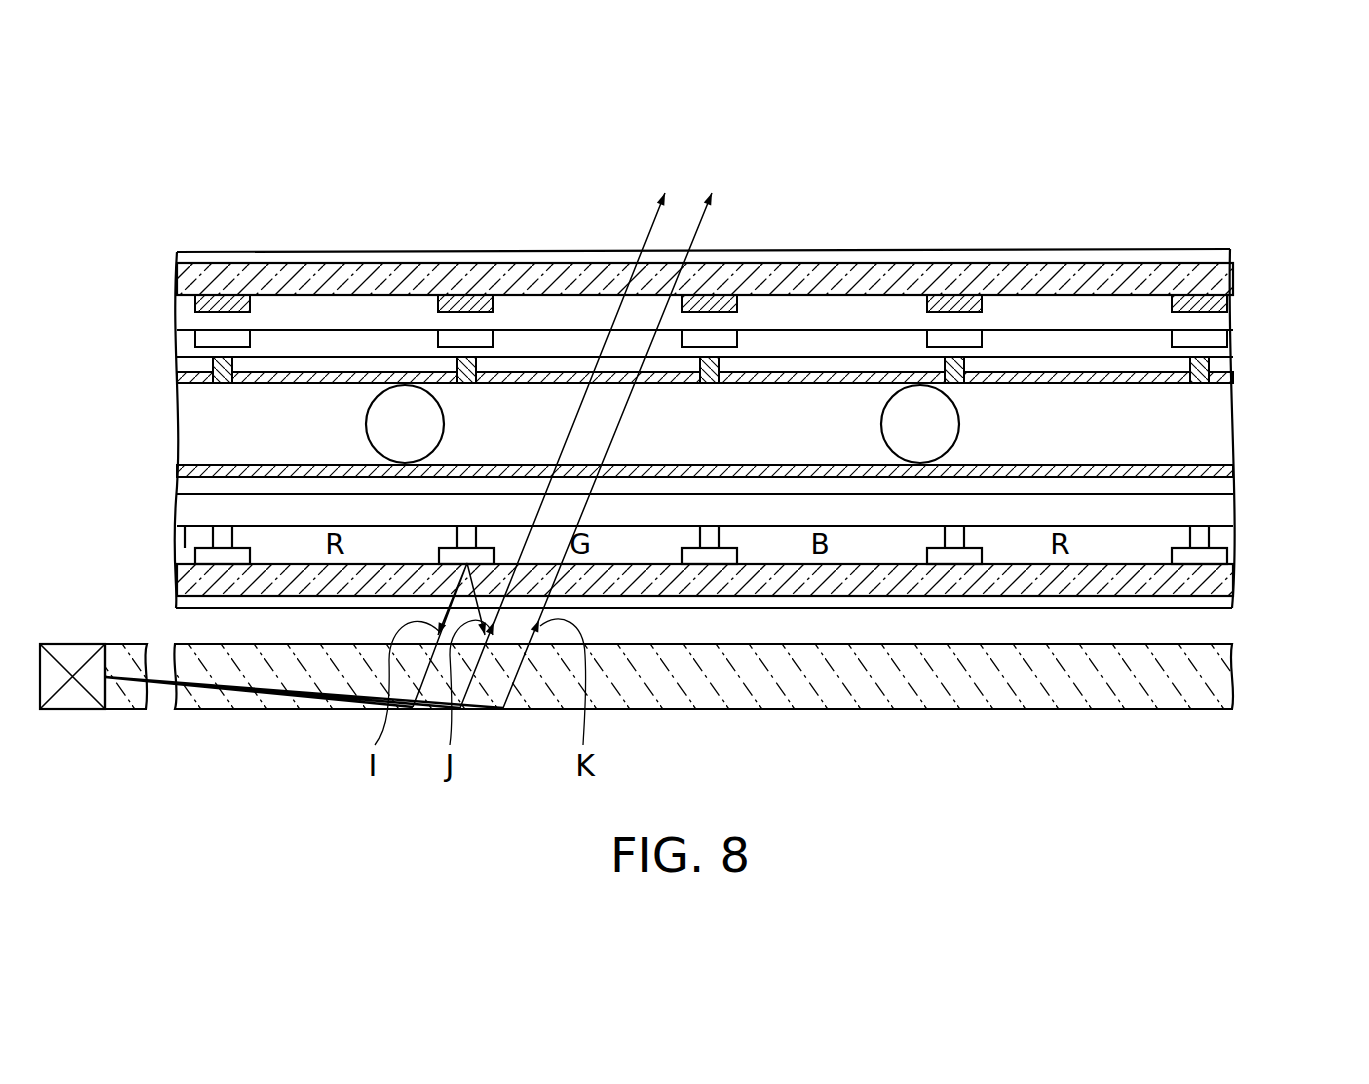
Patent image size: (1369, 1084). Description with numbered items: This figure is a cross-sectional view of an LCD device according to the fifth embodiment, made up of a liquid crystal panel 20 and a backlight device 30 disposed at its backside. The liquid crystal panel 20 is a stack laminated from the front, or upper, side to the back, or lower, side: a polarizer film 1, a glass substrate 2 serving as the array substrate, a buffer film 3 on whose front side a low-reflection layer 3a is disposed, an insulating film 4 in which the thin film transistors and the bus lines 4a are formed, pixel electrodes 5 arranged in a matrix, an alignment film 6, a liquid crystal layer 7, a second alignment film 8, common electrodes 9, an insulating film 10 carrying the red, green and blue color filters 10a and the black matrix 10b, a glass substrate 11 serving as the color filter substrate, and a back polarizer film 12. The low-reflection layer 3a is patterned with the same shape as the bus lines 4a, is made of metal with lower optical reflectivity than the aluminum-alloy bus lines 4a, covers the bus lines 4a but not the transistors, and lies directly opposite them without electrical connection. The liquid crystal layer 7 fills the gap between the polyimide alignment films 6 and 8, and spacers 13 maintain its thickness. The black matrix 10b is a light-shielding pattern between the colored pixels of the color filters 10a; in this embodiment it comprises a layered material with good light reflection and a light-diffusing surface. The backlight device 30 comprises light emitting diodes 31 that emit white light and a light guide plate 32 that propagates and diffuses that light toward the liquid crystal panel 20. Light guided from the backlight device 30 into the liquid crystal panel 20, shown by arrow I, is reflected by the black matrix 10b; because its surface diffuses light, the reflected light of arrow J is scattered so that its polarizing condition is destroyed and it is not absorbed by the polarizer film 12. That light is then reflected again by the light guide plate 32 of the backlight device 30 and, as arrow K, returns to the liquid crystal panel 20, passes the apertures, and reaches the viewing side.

The polarizer film 1 is at (1197, 262).
The glass substrate (array substrate) 2 is at (1215, 283).
The buffer film 3 is at (1213, 320).
The low-reflection layer 3a is at (495, 308).
The insulating film 4 is at (1213, 356).
The bus lines 4a is at (440, 338).
The pixel electrodes 5 is at (303, 368).
The alignment film 6 is at (1217, 382).
The liquid crystal layer 7 is at (1213, 433).
The alignment film 8 is at (1213, 468).
The common electrodes 9 is at (1213, 488).
The insulating film 10 is at (1213, 518).
The color filters 10a is at (280, 533).
The black matrix 10b is at (437, 540).
The glass substrate (color filter substrate) 11 is at (1213, 582).
The polarizer film 12 is at (1213, 603).
The spacers 13 is at (383, 420).
The liquid crystal panel 20 is at (1250, 186).
The backlight device 30 is at (1142, 750).
The light emitting diodes 31 is at (75, 683).
The light guide plate 32 is at (822, 680).